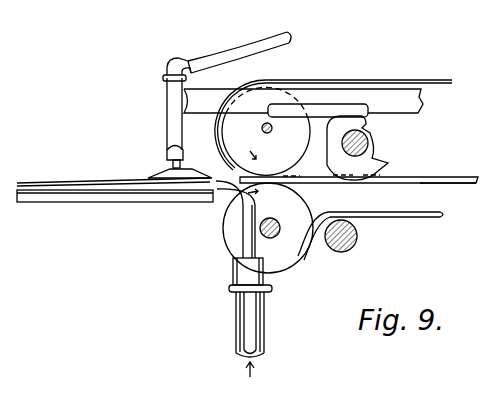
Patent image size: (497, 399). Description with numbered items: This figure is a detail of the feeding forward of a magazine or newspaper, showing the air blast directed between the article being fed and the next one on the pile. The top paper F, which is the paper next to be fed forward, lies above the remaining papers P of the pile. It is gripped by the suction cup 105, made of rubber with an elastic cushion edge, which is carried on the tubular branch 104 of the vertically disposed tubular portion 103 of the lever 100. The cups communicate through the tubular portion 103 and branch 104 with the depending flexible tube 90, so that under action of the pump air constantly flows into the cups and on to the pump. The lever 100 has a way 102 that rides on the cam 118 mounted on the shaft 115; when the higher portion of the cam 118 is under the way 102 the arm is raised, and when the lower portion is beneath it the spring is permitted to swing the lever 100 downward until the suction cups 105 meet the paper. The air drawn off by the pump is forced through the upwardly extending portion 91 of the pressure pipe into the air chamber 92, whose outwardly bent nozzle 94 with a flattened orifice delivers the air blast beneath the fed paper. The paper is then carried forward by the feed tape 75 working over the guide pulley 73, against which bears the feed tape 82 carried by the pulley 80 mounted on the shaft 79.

The flexible tube 90 is at (262, 40).
The tubular portion 103 is at (175, 98).
The lever 100 is at (303, 101).
The way 102 is at (318, 116).
The guide pulley 73 is at (234, 147).
The tubular branch 104 is at (168, 152).
The suction cup 105 is at (153, 174).
The top paper F is at (57, 179).
The paper P is at (113, 194).
The cam 118 is at (378, 158).
The shaft 115 is at (368, 138).
The feed tape 75 is at (434, 178).
The feed tape 82 is at (437, 184).
The pulley 80 is at (297, 254).
The shaft 79 is at (273, 222).
The air blast nozzle 94 is at (241, 231).
The air chamber 92 is at (233, 273).
The upwardly extending portion 91 is at (266, 317).